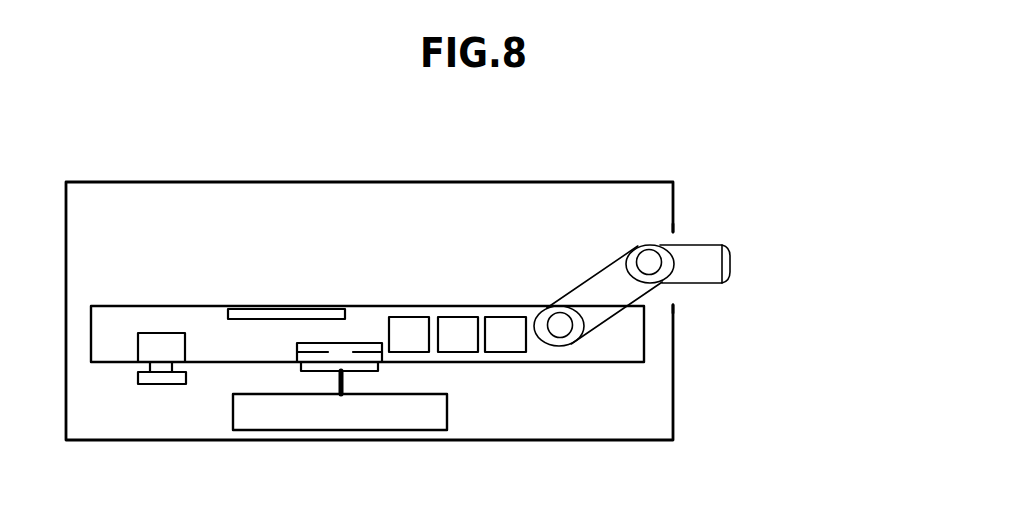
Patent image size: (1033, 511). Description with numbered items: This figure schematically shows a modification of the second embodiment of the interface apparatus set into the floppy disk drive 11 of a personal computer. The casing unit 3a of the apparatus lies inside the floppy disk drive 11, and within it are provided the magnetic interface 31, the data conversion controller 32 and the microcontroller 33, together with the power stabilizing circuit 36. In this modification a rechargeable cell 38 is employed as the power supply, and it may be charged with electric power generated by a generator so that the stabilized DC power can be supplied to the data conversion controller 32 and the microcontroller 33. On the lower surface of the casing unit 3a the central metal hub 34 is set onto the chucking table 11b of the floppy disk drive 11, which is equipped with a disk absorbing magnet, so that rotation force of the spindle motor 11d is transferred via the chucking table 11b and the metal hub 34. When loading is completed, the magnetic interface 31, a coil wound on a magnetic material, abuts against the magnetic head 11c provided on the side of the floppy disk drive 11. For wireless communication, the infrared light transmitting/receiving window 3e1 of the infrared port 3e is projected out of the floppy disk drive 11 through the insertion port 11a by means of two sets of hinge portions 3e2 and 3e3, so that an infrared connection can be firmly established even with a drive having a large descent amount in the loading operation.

The floppy disk drive 11 is at (191, 181).
The insertion port 11a is at (668, 237).
The chucking table 11b is at (382, 365).
The magnetic head 11c is at (160, 368).
The spindle motor 11d is at (447, 410).
The casing unit 3a is at (214, 306).
The infrared port 3e is at (592, 268).
The infrared light transmitting/receiving window 3e1 is at (732, 265).
The hinge portion 3e2 is at (560, 335).
The hinge portion 3e3 is at (648, 250).
The magnetic interface 31 is at (160, 333).
The data conversion controller 32 is at (460, 317).
The microcontroller 33 is at (525, 352).
The central metal hub 34 is at (297, 358).
The power stabilizing circuit 36 is at (410, 317).
The rechargeable cell 38 is at (268, 309).